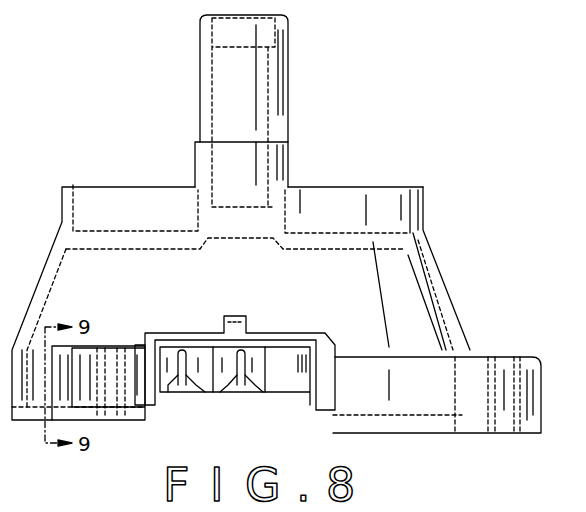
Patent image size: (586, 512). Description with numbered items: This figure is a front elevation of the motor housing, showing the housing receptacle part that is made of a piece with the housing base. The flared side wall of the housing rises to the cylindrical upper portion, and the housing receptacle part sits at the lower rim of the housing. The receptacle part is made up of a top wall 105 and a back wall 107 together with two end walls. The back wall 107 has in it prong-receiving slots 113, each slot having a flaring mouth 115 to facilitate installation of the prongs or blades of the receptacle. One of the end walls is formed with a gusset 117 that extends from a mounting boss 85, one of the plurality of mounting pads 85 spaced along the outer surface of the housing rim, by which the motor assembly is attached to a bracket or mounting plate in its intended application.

The top wall 105 is at (270, 333).
The back wall 107 is at (298, 383).
The prong-receiving slots 113 is at (178, 383).
The flaring mouth 115 is at (184, 372).
The gusset 117 is at (128, 393).
The mounting pad 85 is at (470, 408).